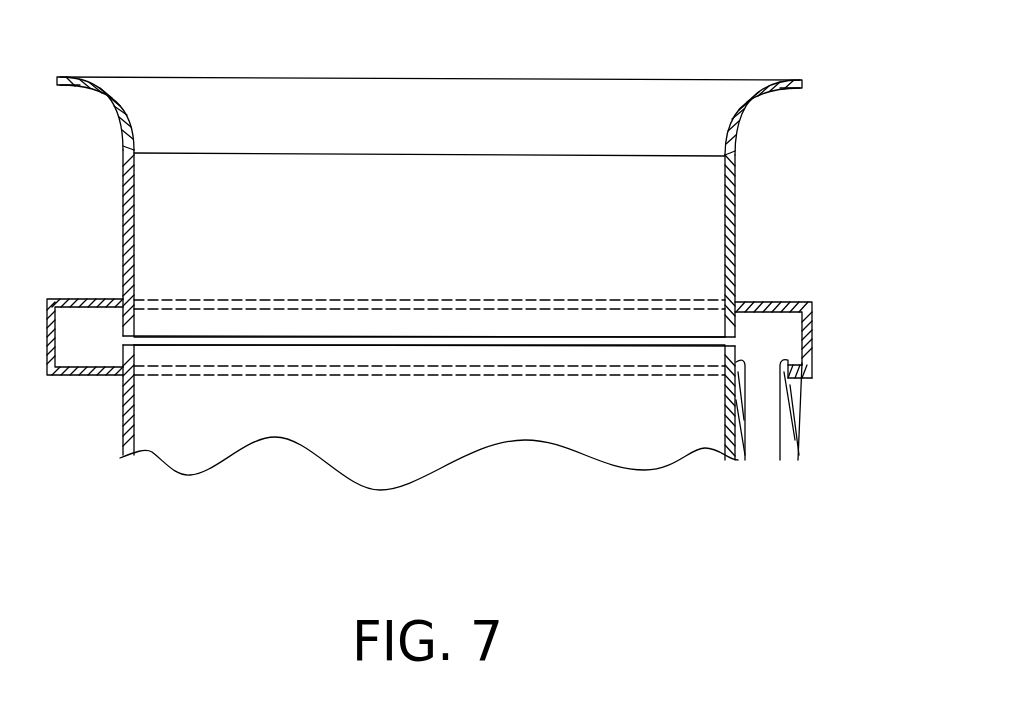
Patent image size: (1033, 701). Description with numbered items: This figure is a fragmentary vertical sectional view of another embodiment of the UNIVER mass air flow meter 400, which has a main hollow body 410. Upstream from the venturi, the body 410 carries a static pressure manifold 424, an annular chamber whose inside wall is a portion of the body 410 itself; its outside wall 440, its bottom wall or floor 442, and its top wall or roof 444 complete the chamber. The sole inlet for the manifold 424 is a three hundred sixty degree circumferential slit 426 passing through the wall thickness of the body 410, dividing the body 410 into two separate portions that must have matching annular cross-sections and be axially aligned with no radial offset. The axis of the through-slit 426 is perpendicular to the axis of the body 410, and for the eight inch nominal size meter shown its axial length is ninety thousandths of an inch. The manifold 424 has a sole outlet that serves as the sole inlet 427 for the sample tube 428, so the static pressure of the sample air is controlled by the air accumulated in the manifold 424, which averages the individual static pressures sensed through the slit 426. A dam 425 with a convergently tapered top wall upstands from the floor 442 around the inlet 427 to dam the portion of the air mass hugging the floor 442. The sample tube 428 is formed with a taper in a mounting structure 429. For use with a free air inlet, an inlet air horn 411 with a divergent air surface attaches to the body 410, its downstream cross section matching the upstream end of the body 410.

The mass air flow meter 400 is at (771, 203).
The main hollow body 410 is at (123, 190).
The inlet air horn 411 is at (663, 110).
The static pressure manifold 424 is at (821, 300).
The dam 425 is at (812, 362).
The circumferential slit 426 is at (282, 338).
The inlet 427 is at (752, 360).
The sample tube 428 is at (833, 405).
The mounting structure 429 is at (800, 458).
The outside wall 440 is at (52, 330).
The floor 442 is at (102, 372).
The roof 444 is at (92, 302).